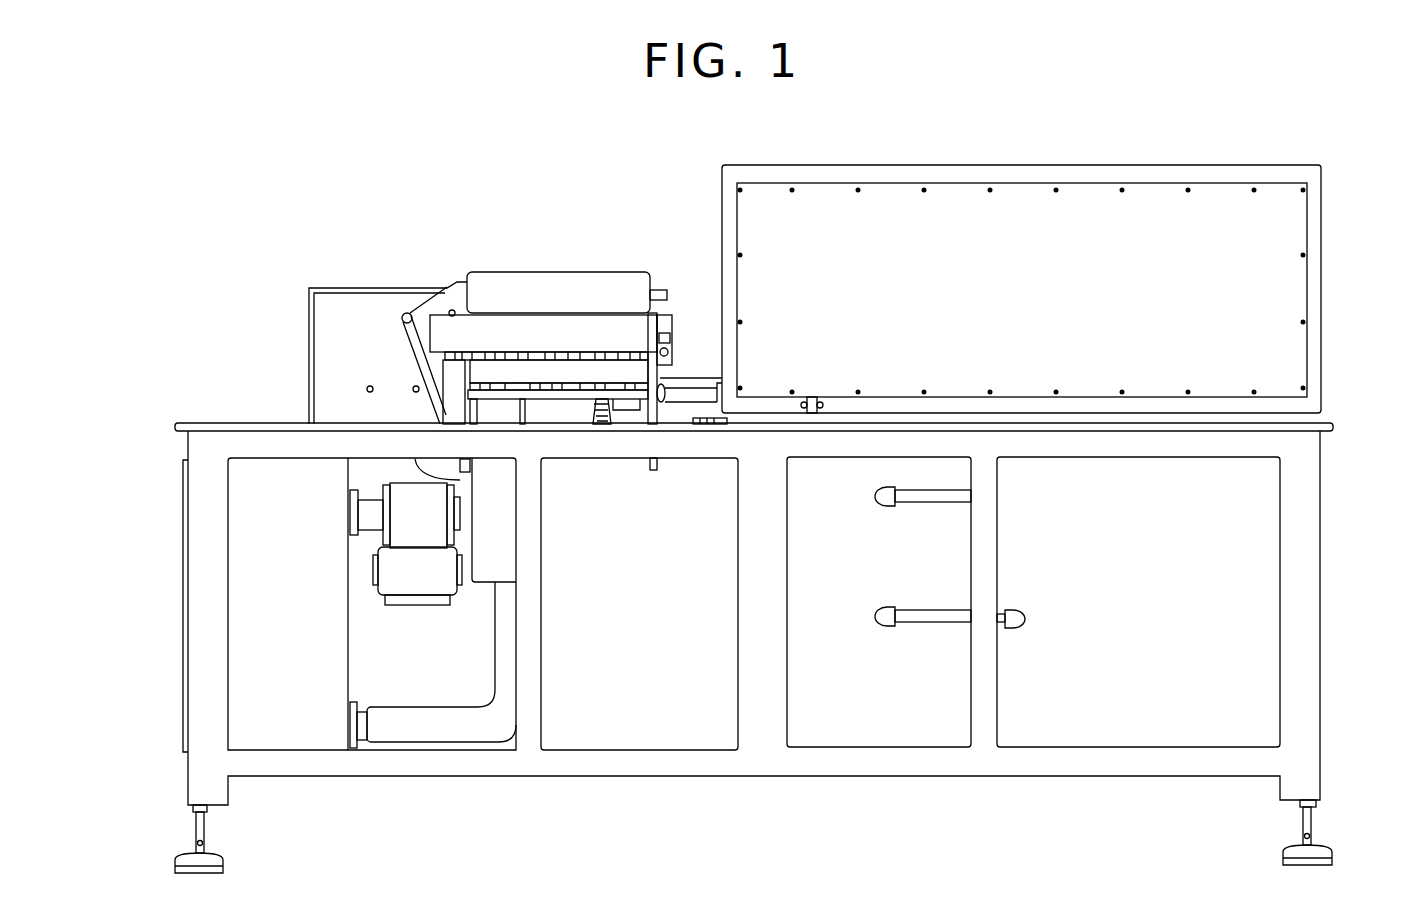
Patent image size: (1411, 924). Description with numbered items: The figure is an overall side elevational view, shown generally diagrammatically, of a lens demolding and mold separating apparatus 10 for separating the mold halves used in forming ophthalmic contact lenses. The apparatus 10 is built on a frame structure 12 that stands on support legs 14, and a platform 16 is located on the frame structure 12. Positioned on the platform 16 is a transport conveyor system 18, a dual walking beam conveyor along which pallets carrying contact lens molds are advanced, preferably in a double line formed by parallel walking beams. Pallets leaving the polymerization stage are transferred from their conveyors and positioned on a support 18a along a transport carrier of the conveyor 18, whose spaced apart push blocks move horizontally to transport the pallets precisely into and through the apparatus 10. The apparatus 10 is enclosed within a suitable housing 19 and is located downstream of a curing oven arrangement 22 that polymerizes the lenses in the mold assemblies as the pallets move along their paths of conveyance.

The demolding module or apparatus 10 is at (1347, 252).
The frame structure 12 is at (792, 773).
The support legs 14 is at (205, 835).
The platform 16 is at (268, 424).
The transport conveyor system 18 is at (672, 410).
The support 18a is at (690, 372).
The housing 19 is at (810, 165).
The curing oven arrangement 22 is at (365, 288).